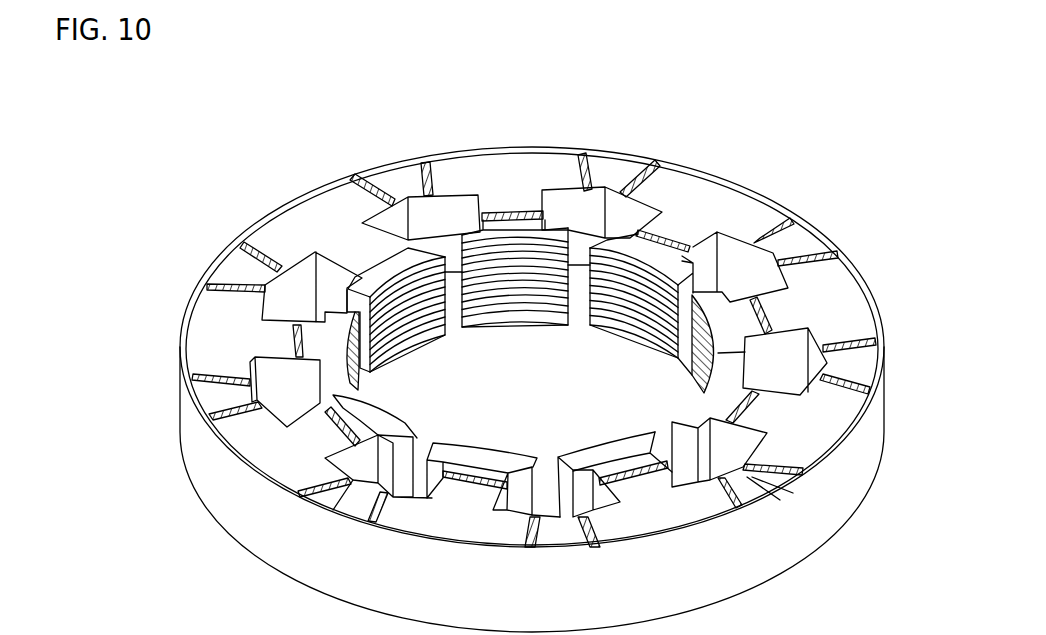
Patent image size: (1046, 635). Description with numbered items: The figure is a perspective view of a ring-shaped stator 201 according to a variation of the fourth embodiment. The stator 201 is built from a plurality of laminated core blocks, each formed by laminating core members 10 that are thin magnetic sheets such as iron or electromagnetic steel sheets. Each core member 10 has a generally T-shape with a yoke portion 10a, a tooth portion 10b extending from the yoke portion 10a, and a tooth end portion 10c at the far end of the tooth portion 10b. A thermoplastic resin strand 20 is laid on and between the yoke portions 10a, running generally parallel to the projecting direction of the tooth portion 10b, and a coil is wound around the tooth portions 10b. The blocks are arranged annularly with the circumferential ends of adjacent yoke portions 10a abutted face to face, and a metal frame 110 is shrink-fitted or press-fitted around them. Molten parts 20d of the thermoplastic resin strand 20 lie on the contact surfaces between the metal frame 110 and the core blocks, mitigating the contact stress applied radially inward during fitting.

The core member 10 is at (484, 310).
The yoke portion 10a is at (535, 157).
The tooth portion 10b is at (265, 333).
The tooth end portion 10c is at (380, 275).
The thermoplastic resin strand 20 is at (425, 163).
The molten part 20d is at (657, 163).
The metal frame 110 is at (744, 190).
The stator 201 is at (607, 98).